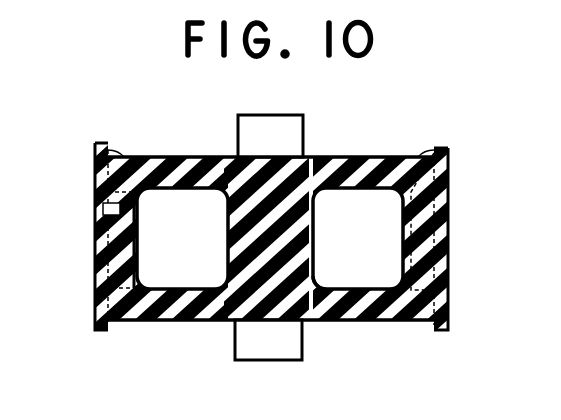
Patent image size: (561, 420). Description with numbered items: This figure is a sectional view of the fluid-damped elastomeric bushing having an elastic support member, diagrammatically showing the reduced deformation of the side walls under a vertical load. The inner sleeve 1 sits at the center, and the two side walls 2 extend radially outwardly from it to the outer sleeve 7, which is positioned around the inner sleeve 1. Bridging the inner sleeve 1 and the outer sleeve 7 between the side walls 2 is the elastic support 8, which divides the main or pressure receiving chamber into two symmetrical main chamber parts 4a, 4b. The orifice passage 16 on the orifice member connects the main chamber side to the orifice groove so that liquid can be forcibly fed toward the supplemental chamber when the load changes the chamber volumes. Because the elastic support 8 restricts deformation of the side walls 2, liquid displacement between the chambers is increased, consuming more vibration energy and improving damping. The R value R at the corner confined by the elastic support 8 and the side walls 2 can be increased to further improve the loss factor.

The inner sleeve 1 is at (283, 122).
The side walls 2 is at (372, 158).
The main chamber part 4a is at (182, 205).
The main chamber part 4b is at (360, 208).
The outer sleeve 7 is at (450, 180).
The elastic support 8 is at (268, 232).
The orifice passage 16 is at (96, 206).
The R value R is at (324, 280).